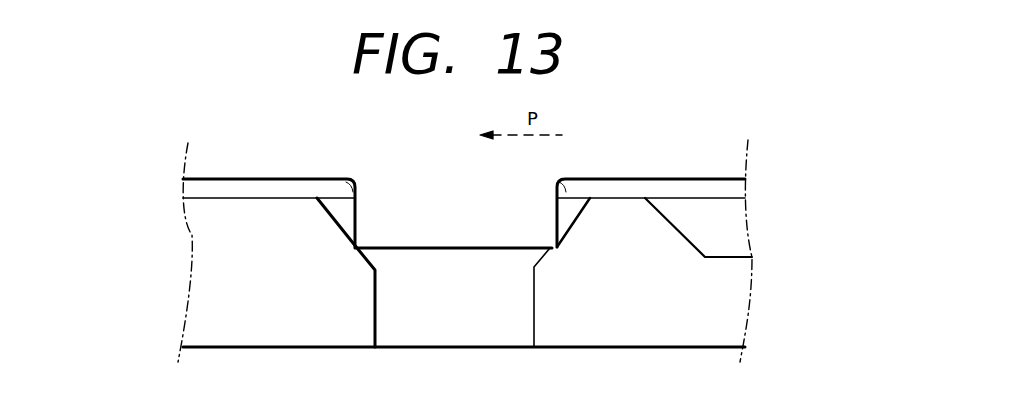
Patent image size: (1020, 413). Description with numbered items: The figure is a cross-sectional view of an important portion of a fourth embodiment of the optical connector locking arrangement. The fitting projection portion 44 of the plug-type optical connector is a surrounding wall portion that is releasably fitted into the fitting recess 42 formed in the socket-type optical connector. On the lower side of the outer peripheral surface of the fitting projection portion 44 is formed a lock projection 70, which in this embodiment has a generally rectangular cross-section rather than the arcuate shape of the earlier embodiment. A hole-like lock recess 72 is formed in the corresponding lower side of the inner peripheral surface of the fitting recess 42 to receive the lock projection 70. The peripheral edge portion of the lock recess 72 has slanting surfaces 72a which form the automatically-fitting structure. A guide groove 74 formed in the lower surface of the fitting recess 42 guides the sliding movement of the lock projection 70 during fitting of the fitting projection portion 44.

The fitting recess 42 is at (170, 269).
The fitting projection portion 44 is at (186, 190).
The lock projection 70 is at (468, 238).
The lock recess 72 is at (389, 312).
The slanting surfaces 72a is at (350, 200).
The guide groove 74 is at (722, 248).